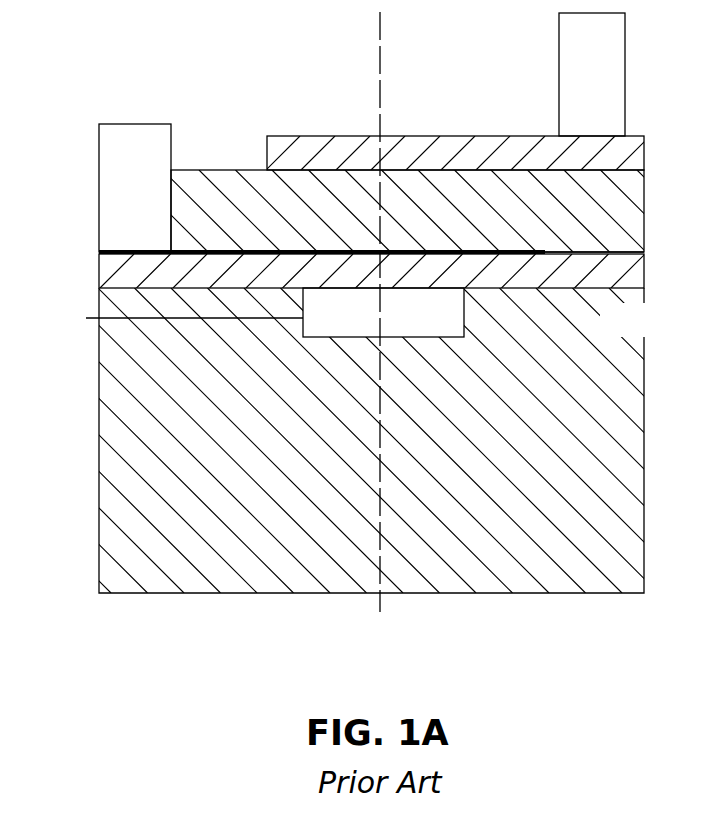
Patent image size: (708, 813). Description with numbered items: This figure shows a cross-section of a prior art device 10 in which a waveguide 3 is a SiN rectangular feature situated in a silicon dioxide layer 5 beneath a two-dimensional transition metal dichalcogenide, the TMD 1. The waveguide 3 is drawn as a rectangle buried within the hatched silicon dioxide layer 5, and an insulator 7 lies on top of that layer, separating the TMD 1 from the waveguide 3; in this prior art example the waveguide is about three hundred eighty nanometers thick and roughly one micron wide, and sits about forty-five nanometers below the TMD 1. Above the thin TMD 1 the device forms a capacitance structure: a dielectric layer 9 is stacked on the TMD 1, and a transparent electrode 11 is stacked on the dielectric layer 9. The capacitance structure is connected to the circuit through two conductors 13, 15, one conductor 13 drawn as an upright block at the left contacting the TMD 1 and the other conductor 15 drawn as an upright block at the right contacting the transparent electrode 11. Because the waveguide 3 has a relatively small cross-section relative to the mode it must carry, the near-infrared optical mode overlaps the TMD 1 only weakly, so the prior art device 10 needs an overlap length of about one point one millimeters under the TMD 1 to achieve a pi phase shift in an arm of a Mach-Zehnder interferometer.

The prior art semiconductor device 10 is at (140, 95).
The conductor 13 is at (115, 188).
The conductor 15 is at (563, 73).
The transparent electrode 11 is at (267, 150).
The dielectric layer 9 is at (217, 177).
The 2D TMD 1 is at (100, 251).
The insulator 7 is at (102, 280).
The waveguide 3 is at (86, 318).
The SiO2 layer 5 is at (110, 420).